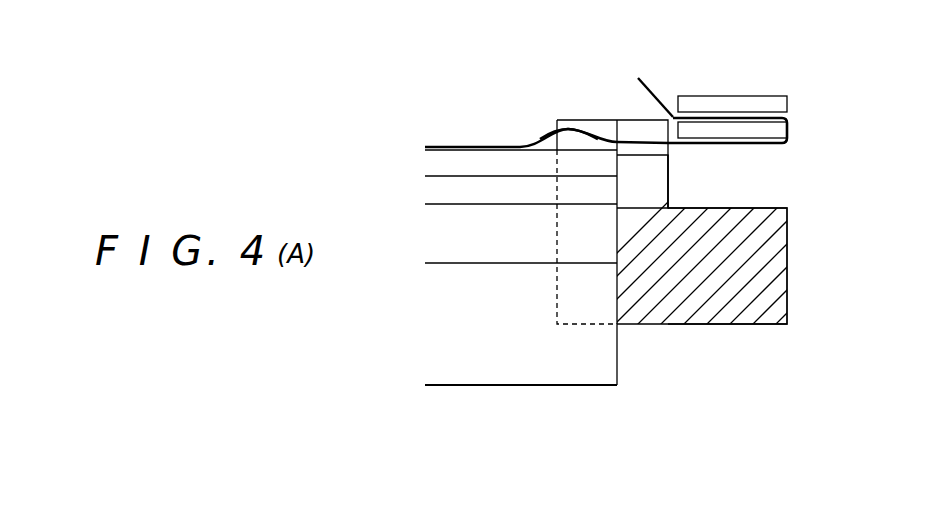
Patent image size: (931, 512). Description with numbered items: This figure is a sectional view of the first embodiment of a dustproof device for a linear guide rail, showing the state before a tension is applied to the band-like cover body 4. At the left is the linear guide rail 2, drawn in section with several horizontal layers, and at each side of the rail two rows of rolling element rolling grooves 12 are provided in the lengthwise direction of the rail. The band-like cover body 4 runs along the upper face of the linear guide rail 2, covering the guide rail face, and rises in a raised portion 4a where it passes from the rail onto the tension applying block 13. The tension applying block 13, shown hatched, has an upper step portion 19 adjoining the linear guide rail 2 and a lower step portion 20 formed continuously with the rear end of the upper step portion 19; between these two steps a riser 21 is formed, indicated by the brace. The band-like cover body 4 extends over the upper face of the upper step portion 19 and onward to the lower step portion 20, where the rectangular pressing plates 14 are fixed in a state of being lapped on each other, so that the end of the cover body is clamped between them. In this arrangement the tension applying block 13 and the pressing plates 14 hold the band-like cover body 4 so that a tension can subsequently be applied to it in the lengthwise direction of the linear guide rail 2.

The linear guide rail 2 is at (468, 360).
The rolling element rolling grooves 12 is at (512, 235).
The band-like cover body 4 is at (477, 142).
The raised portion of conductive layer 4a is at (545, 128).
The tension applying block 13 is at (735, 273).
The upper step portion 19 is at (650, 300).
The lower step portion 20 is at (748, 302).
The riser 21 is at (675, 157).
The pressing plate 14 is at (777, 104).